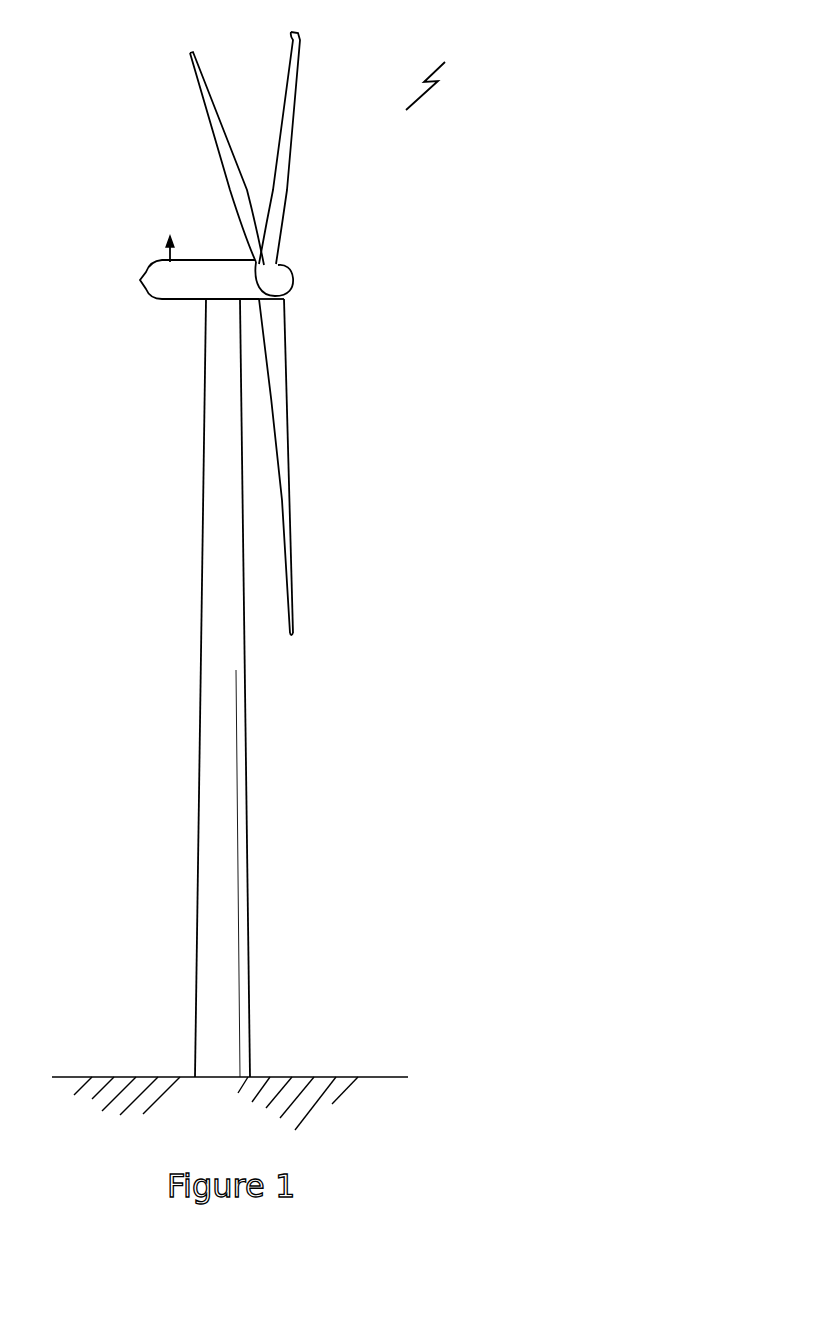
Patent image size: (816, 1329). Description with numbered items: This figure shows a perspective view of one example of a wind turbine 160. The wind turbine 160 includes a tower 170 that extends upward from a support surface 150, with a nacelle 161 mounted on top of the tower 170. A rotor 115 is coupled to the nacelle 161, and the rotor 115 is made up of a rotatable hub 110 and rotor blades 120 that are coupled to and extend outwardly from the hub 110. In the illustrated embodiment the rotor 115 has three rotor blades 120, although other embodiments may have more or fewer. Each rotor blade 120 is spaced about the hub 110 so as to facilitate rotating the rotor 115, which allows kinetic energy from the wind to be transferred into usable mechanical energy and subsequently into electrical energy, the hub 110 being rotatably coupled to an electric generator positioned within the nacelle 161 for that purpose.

The rotatable hub 110 is at (293, 287).
The rotor 115 is at (298, 258).
The rotor blade 120 is at (288, 75).
The support surface 150 is at (128, 1075).
The wind turbine 160 is at (458, 74).
The nacelle 161 is at (182, 302).
The tower 170 is at (210, 797).